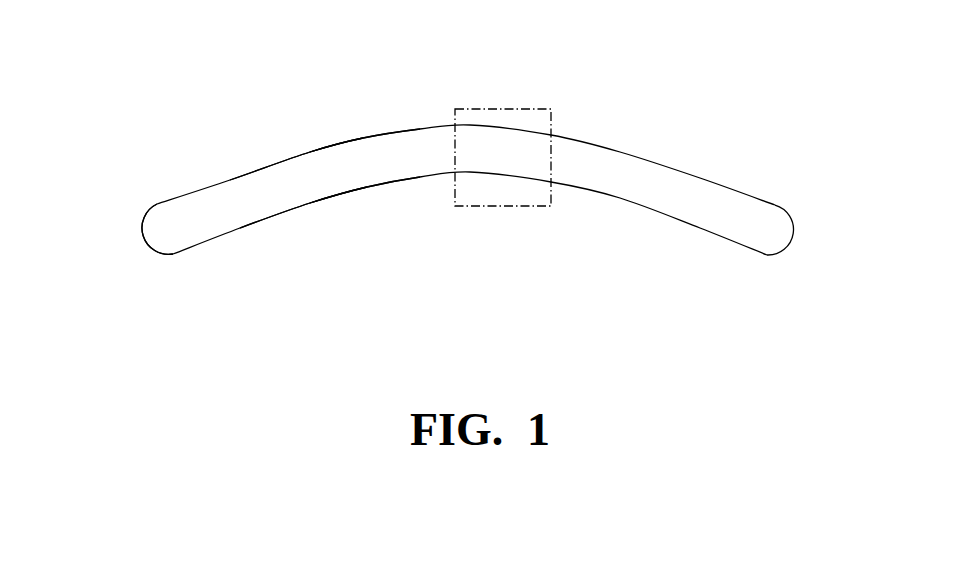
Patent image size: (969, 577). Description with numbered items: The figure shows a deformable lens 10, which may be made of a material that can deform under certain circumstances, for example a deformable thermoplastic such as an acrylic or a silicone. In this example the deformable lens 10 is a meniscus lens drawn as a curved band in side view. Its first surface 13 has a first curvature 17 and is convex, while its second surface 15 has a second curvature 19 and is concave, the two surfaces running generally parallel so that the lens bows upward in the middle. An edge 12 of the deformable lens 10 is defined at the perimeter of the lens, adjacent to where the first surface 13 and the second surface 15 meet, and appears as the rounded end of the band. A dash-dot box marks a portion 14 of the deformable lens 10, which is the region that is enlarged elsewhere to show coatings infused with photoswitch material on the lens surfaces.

The deformable lens 10 is at (767, 227).
The edge 12 is at (155, 229).
The first surface 13 is at (310, 152).
The portion 14 is at (508, 109).
The second surface 15 is at (367, 187).
The first curvature 17 is at (363, 138).
The second curvature 19 is at (300, 208).